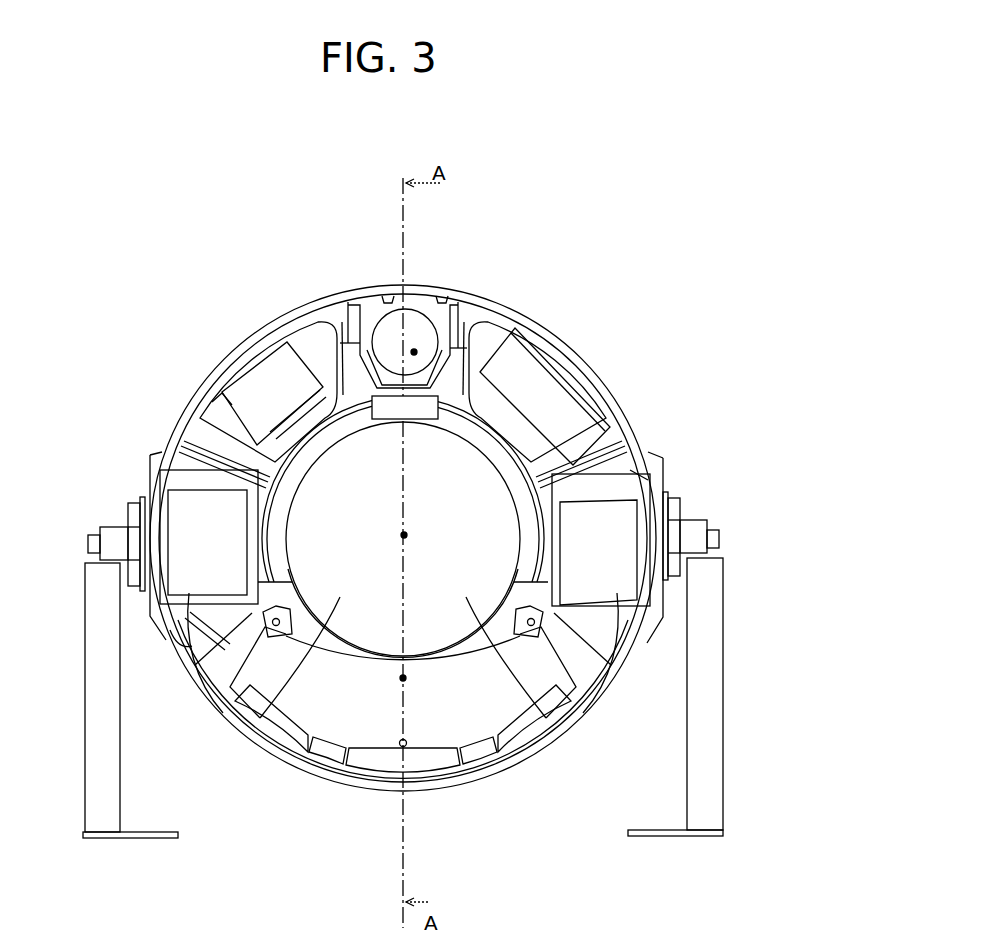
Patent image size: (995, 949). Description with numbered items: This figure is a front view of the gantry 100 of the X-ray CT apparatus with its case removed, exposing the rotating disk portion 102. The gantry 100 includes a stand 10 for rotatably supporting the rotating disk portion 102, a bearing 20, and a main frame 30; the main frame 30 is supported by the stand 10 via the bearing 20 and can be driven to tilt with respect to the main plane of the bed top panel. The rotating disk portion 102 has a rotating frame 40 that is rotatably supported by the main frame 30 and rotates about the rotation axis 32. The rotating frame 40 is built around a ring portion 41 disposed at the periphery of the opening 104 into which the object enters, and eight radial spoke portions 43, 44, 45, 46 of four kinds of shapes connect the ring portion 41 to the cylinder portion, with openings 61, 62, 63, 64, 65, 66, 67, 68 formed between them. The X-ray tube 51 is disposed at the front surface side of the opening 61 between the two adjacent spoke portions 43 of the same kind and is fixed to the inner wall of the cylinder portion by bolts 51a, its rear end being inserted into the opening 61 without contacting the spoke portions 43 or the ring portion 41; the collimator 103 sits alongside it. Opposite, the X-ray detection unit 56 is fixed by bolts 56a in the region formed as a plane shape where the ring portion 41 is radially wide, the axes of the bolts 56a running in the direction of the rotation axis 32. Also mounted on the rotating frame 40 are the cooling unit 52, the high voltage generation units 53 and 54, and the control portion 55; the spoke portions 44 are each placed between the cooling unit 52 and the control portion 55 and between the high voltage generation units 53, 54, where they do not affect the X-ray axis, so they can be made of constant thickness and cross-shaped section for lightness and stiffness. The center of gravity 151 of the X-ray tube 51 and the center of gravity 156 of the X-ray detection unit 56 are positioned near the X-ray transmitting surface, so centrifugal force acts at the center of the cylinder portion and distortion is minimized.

The gantry 100 is at (712, 142).
The rotating disk portion 102 is at (652, 352).
The stand 10 is at (85, 643).
The bearing 20 is at (107, 523).
The main frame 30 is at (665, 455).
The rotation axis 32 is at (406, 537).
The rotating frame 40 is at (583, 360).
The ring portion 41 is at (297, 477).
The spoke portion 43 is at (345, 302).
The spoke portion 44 is at (217, 433).
The spoke portion 45 is at (215, 640).
The spoke portion 46 is at (328, 762).
The X-ray tube 51 is at (408, 312).
The bolts 51a is at (388, 300).
The cooling unit 52 is at (528, 363).
The high voltage generation unit 53 is at (267, 383).
The high voltage generation unit 54 is at (173, 505).
The control portion 55 is at (608, 598).
The X-ray detection unit 56 is at (548, 730).
The bolts 56a is at (283, 614).
The opening 61 is at (356, 318).
The opening 62 is at (500, 338).
The opening 63 is at (640, 470).
The opening 64 is at (525, 735).
The opening 65 is at (365, 780).
The opening 66 is at (287, 737).
The opening 67 is at (190, 625).
The opening 68 is at (212, 410).
The collimator 103 is at (442, 413).
The opening 104 is at (262, 722).
The center of gravity 151 is at (416, 350).
The center of gravity 156 is at (405, 680).